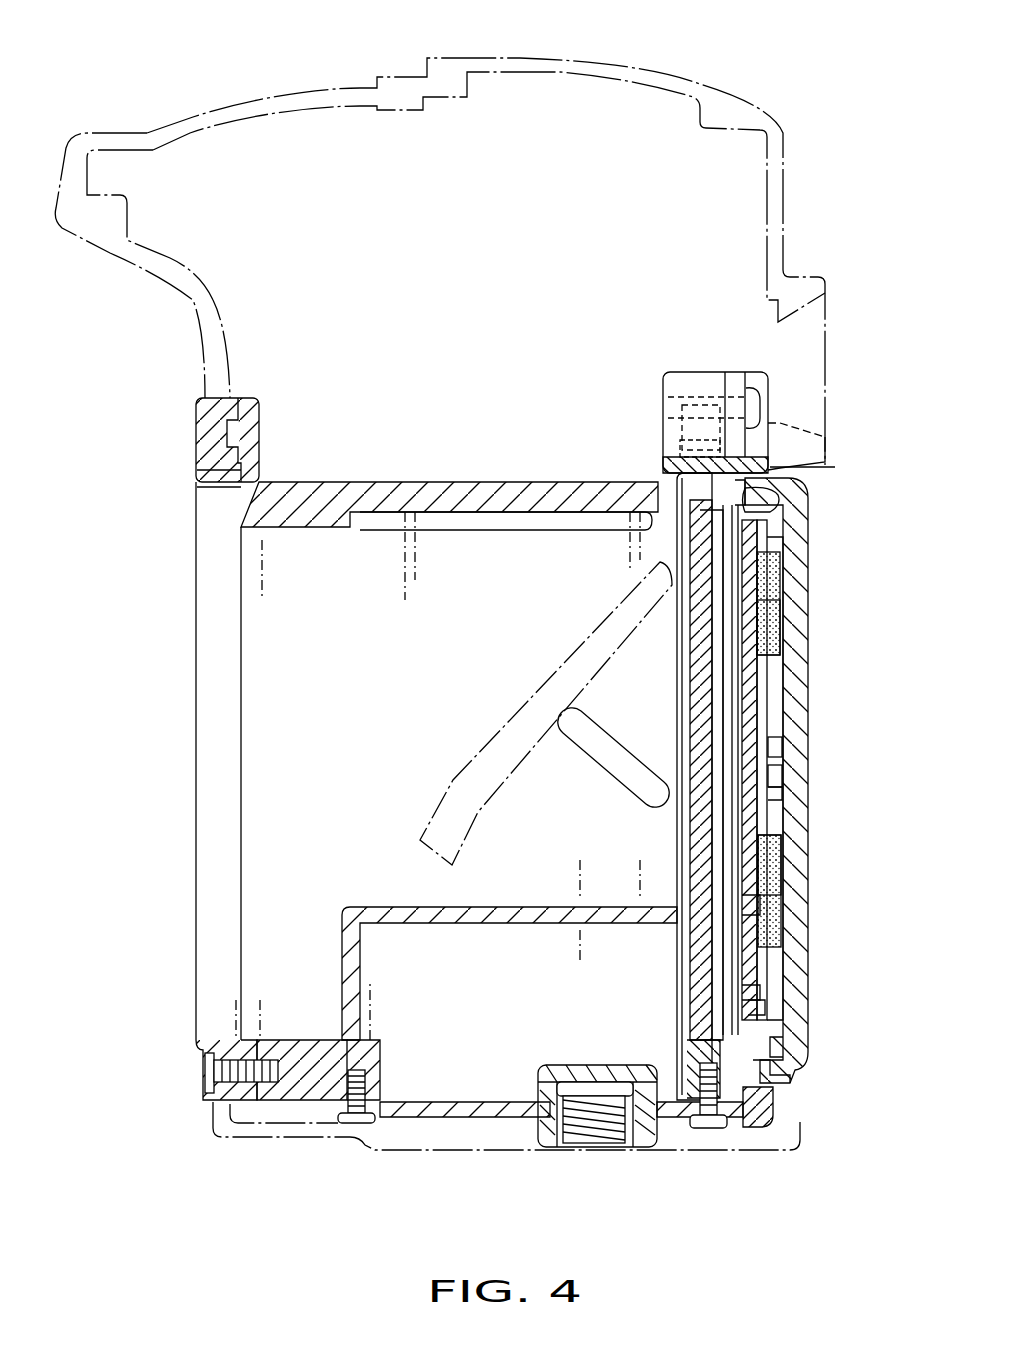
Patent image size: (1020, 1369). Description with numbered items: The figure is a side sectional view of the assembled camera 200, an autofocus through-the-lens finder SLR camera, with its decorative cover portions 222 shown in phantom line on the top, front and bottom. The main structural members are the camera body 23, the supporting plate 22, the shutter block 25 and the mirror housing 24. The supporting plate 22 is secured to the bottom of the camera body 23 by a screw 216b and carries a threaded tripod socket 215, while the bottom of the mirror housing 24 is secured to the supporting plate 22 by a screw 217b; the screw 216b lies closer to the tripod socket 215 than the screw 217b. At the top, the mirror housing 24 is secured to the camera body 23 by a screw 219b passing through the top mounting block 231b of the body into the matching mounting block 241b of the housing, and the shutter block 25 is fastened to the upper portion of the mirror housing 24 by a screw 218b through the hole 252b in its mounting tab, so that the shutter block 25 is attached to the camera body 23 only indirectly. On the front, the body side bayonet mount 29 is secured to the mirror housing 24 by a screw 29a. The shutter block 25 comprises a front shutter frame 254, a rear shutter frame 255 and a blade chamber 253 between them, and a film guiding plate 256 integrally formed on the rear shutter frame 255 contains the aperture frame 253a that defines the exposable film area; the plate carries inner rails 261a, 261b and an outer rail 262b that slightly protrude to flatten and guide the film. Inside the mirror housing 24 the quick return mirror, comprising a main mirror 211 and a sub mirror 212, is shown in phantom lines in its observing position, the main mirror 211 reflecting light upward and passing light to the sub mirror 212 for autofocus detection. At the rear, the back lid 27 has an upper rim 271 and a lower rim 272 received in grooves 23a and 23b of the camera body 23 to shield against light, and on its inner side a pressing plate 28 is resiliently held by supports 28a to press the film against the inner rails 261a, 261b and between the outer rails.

The camera 200 is at (633, 64).
The decorative cover portions 222 is at (398, 70).
The body side bayonet mount 29 is at (205, 438).
The screw 29a is at (205, 1075).
The mirror housing 24 is at (345, 930).
The supporting plate 22 is at (480, 1112).
The screw 217b is at (362, 1124).
The threaded tripod socket 215 is at (615, 1130).
The screw 216b is at (710, 1122).
The shutter block 25 is at (668, 1060).
The front shutter frame 254 is at (680, 965).
The aperture frame 253a is at (675, 885).
The blade chamber 253 is at (760, 990).
The rear shutter frame 255 is at (765, 1010).
The film guiding plate 256 is at (750, 905).
The back lid 27 is at (795, 695).
The pressing plate 28 is at (770, 745).
The supports 28a is at (770, 840).
The inner rail 261a is at (772, 880).
The inner rail 261b is at (775, 625).
The outer rail 262b is at (775, 585).
The camera body 23 is at (805, 1050).
The groove 23a is at (782, 535).
The groove 23b is at (790, 1120).
The upper rim 271 is at (790, 495).
The lower rim 272 is at (800, 1080).
The matching mounting block 241b is at (688, 380).
The top mounting block 231b is at (735, 375).
The hole 252b is at (665, 440).
The screw 219b is at (757, 402).
The screw 218b is at (780, 468).
The main mirror 211 is at (567, 662).
The sub mirror 212 is at (610, 763).